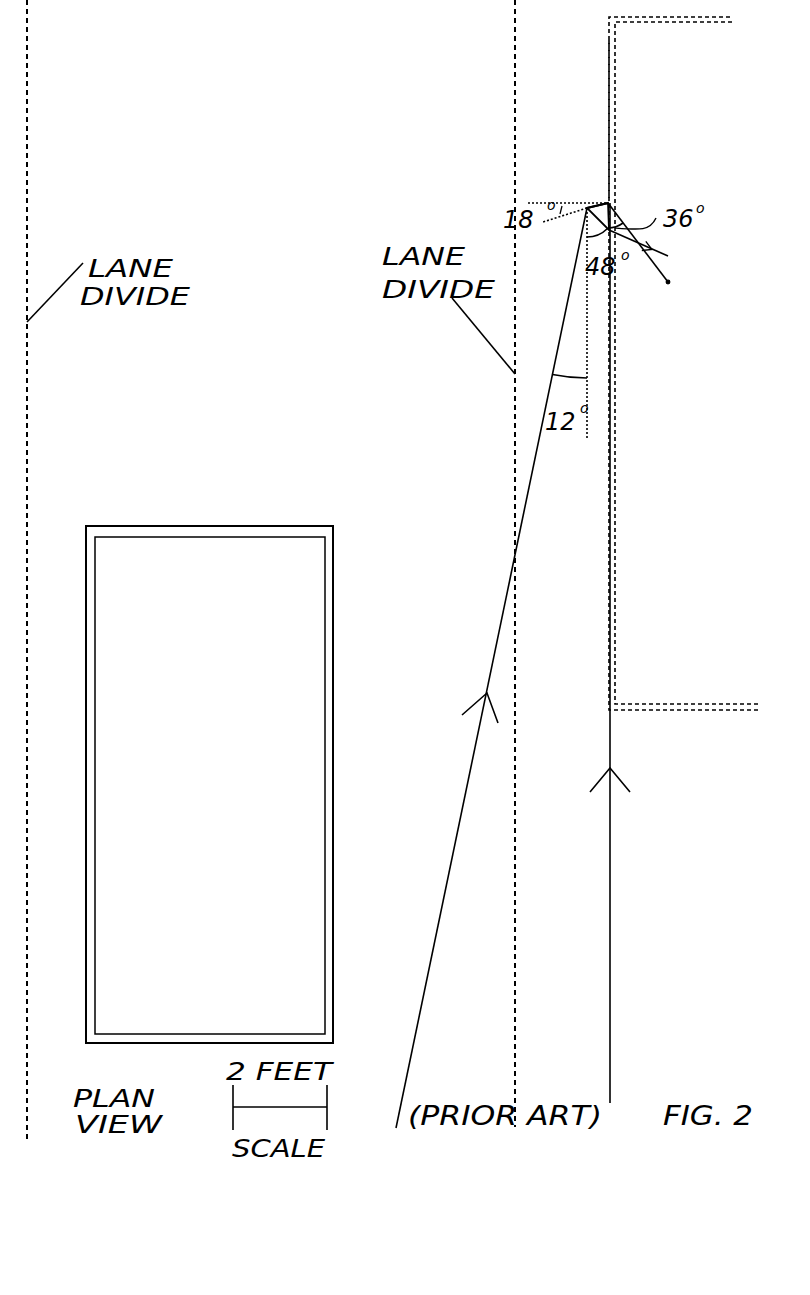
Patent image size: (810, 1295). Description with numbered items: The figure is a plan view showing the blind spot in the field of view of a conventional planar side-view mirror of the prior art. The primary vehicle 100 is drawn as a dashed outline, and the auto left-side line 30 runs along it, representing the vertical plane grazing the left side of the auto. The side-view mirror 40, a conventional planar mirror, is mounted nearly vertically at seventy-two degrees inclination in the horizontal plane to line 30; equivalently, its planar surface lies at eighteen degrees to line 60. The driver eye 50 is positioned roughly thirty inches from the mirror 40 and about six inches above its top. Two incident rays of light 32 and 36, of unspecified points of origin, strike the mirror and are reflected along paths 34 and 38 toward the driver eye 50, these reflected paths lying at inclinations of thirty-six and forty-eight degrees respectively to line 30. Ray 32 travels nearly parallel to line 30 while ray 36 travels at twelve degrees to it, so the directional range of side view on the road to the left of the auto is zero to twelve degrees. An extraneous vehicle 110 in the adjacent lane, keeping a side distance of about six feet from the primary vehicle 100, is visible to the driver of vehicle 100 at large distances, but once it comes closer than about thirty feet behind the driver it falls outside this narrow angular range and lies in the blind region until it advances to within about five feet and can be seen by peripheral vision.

The auto left-side line 30 is at (609, 120).
The ray of light 32 is at (610, 715).
The reflected path 34 is at (655, 247).
The ray of light 36 is at (501, 615).
The reflected path 38 is at (630, 243).
The side-view mirror 40 is at (600, 206).
The driver eye 50 is at (657, 248).
The reference line 60 is at (577, 203).
The primary vehicle 100 is at (683, 363).
The extraneous vehicle 110 is at (209, 784).